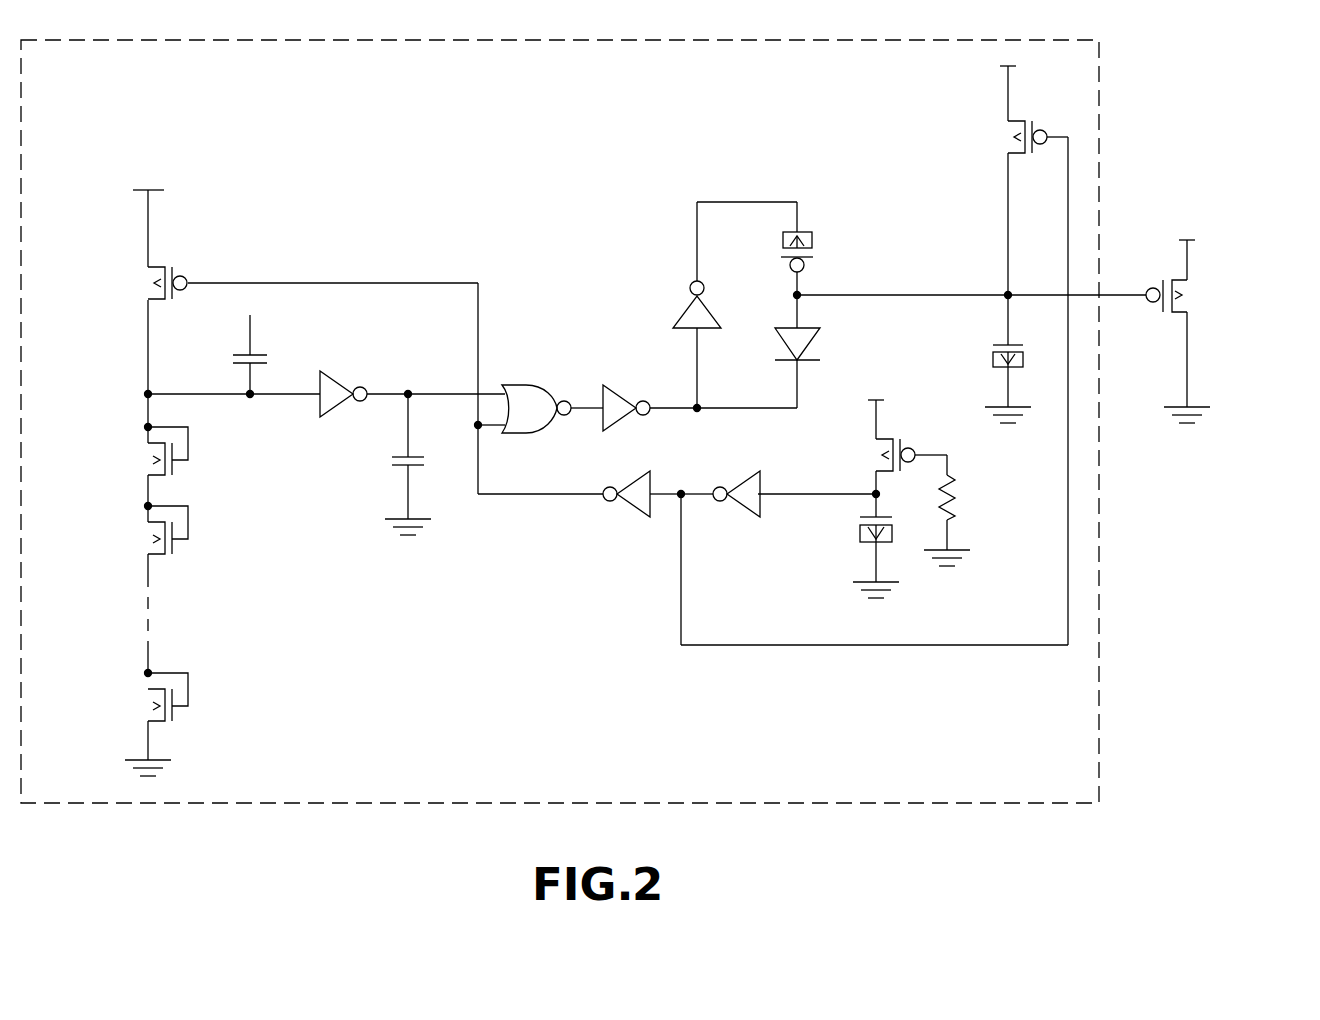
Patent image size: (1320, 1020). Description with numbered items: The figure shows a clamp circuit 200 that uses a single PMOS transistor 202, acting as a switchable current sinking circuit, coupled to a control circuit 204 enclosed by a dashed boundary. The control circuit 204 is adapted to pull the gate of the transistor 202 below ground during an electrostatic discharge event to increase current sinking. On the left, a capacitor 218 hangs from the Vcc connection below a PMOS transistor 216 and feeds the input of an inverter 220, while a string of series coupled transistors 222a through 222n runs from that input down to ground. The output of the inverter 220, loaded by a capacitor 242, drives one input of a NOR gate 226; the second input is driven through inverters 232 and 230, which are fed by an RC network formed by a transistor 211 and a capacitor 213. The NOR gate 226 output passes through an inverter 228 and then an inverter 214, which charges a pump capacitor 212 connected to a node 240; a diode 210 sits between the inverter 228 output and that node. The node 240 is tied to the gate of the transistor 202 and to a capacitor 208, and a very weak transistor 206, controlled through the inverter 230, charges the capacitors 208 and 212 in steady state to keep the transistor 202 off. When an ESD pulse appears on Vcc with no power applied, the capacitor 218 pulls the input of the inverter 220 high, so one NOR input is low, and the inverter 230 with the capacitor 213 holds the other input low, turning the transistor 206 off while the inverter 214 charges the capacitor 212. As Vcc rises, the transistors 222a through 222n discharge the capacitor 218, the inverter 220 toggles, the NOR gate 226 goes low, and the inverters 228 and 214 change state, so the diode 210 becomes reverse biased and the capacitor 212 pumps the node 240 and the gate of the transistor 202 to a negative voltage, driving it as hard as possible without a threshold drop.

The clamp circuit 200 is at (1212, 546).
The PMOS transistor 202 is at (1190, 290).
The control circuit 204 is at (1100, 155).
The transistor 206 is at (1008, 144).
The capacitor 208 is at (994, 360).
The diode 210 is at (818, 346).
The transistor 211 is at (876, 454).
The capacitor 212 is at (818, 242).
The capacitor 213 is at (858, 538).
The inverter 214 is at (686, 308).
The PMOS transistor 216 is at (150, 292).
The capacitor 218 is at (242, 360).
The inverter 220 is at (336, 372).
The series coupled transistor 222a is at (144, 450).
The series coupled transistor 222n is at (144, 696).
The NOR gate 226 is at (514, 384).
The inverter 228 is at (618, 386).
The inverter 230 is at (741, 518).
The inverter 232 is at (633, 513).
The node 240 is at (924, 286).
The capacitor 242 is at (400, 458).